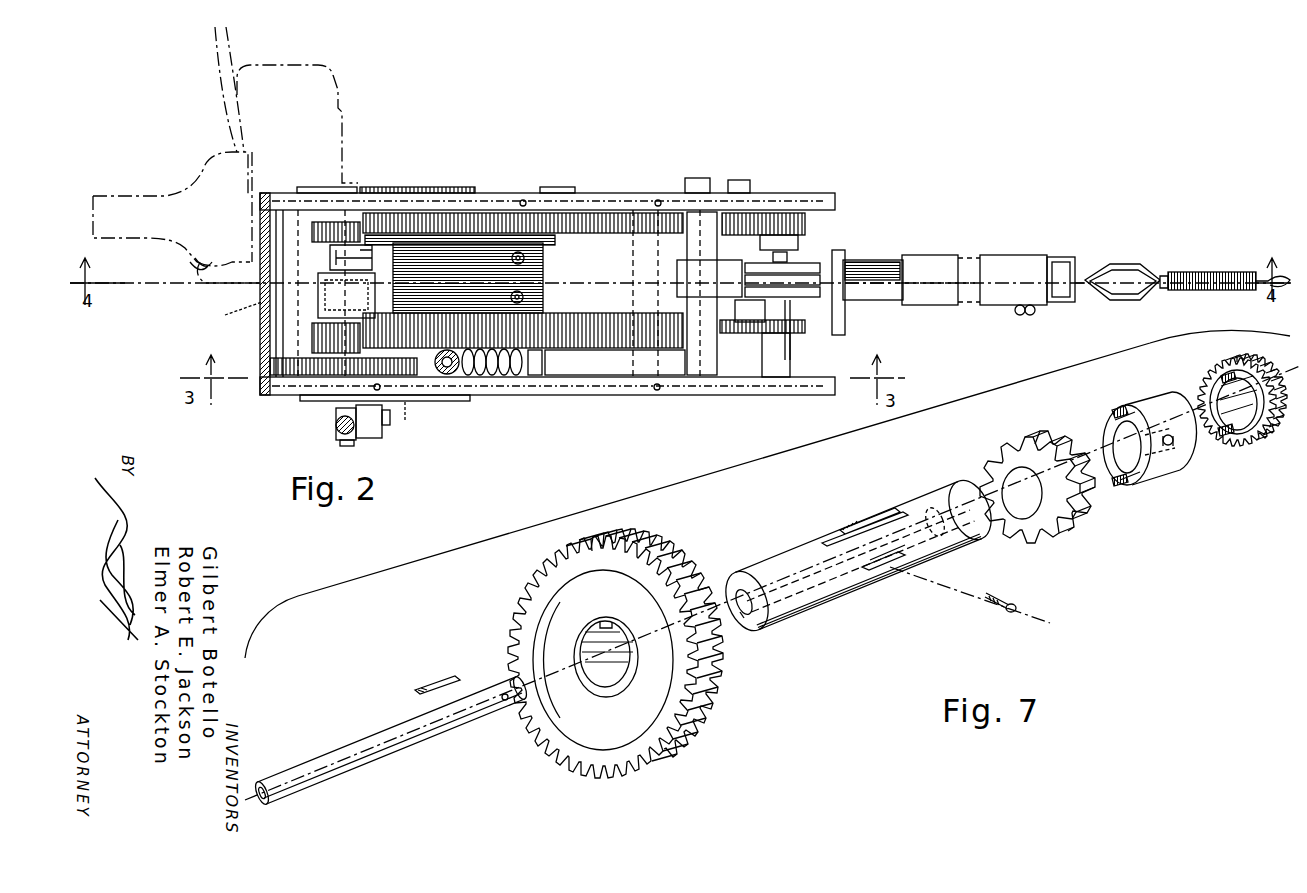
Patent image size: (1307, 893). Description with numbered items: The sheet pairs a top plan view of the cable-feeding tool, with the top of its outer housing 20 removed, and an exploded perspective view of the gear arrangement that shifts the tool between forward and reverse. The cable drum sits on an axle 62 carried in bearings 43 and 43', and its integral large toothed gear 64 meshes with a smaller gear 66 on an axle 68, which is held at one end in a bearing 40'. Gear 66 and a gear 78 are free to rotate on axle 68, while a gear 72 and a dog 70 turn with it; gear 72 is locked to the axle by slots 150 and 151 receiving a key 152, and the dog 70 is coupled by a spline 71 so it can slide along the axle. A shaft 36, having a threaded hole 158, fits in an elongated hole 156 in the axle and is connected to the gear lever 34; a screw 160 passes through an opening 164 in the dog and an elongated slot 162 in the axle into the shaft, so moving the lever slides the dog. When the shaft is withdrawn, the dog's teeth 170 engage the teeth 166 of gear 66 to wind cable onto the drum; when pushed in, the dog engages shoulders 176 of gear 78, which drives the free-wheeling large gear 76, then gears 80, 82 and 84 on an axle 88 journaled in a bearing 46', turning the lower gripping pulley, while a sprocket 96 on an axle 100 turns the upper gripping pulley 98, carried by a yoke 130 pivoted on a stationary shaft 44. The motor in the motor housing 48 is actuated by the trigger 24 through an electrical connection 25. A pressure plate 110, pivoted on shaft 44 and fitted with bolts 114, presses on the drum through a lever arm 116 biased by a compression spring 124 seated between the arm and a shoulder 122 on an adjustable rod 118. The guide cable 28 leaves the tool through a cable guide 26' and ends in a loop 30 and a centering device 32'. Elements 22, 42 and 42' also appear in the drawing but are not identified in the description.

In FIG. 2, the outer housing 20 is at (630, 193).
In FIG. 2, the machine frame 22 is at (160, 192).
In FIG. 2, the trigger 24 is at (198, 264).
In FIG. 2, the electrical connection 25 is at (215, 88).
In FIG. 2, the cable guide 26' is at (945, 266).
In FIG. 2, the guide cable 28 is at (1058, 257).
In FIG. 2, the loop 30 is at (1278, 273).
In FIG. 2, the centering device 32' is at (1126, 266).
In FIG. 2, the gear lever 34 is at (338, 420).
In FIG. 2, the shaft 36 is at (340, 442).
In FIG. 7, the shaft 36 is at (340, 748).
In FIG. 2, the bearing 40' is at (323, 177).
In FIG. 2, the side plate 42 is at (416, 408).
In FIG. 2, the side plate 42' is at (435, 177).
In FIG. 2, the bearing 43 is at (572, 408).
In FIG. 2, the bearing 43' is at (563, 177).
In FIG. 2, the stationary shaft 44 is at (678, 390).
In FIG. 2, the bearing 46' is at (733, 181).
In FIG. 2, the motor housing 48 is at (345, 112).
In FIG. 2, the axle 62 is at (470, 212).
In FIG. 2, the large toothed gear 64 is at (590, 313).
In FIG. 2, the gear 66 is at (315, 338).
In FIG. 7, the gear 66 is at (1050, 532).
In FIG. 2, the axle 68 is at (320, 290).
In FIG. 2, the dog 70 is at (330, 258).
In FIG. 7, the dog 70 is at (1158, 472).
In FIG. 7, the spline 71 is at (862, 512).
In FIG. 2, the gear 72 is at (270, 365).
In FIG. 7, the gear 72 is at (730, 714).
In FIG. 2, the large gear 76 is at (430, 213).
In FIG. 2, the gear 78 is at (312, 233).
In FIG. 7, the gear 78 is at (1262, 436).
In FIG. 2, the small gear 80 is at (690, 243).
In FIG. 2, the small gear 82 is at (740, 236).
In FIG. 2, the gear 84 is at (775, 213).
In FIG. 2, the axle 88 is at (787, 257).
In FIG. 2, the sprocket 96 is at (805, 327).
In FIG. 2, the upper gripping pulley 98 is at (822, 270).
In FIG. 2, the axle 100 is at (765, 310).
In FIG. 2, the pressure plate 110 is at (606, 271).
In FIG. 2, the bolts 114 is at (525, 258).
In FIG. 2, the lever arm 116 is at (625, 370).
In FIG. 2, the spring supporting rod 118 is at (450, 374).
In FIG. 2, the shoulder 122 is at (468, 375).
In FIG. 2, the compression spring 124 is at (493, 375).
In FIG. 2, the yoke 130 is at (680, 290).
In FIG. 7, the slot 150 is at (606, 622).
In FIG. 7, the slot 151 is at (748, 574).
In FIG. 7, the key 152 is at (440, 677).
In FIG. 7, the elongated hole 156 is at (746, 618).
In FIG. 7, the threaded hole 158 is at (508, 703).
In FIG. 7, the screw 160 is at (1005, 610).
In FIG. 7, the elongated slot 162 is at (872, 568).
In FIG. 7, the opening 164 is at (1173, 445).
In FIG. 7, the shoulders or teeth 166 is at (1078, 450).
In FIG. 7, the shoulders or teeth 170 is at (1118, 410).
In FIG. 7, the shoulders 176 is at (1223, 380).